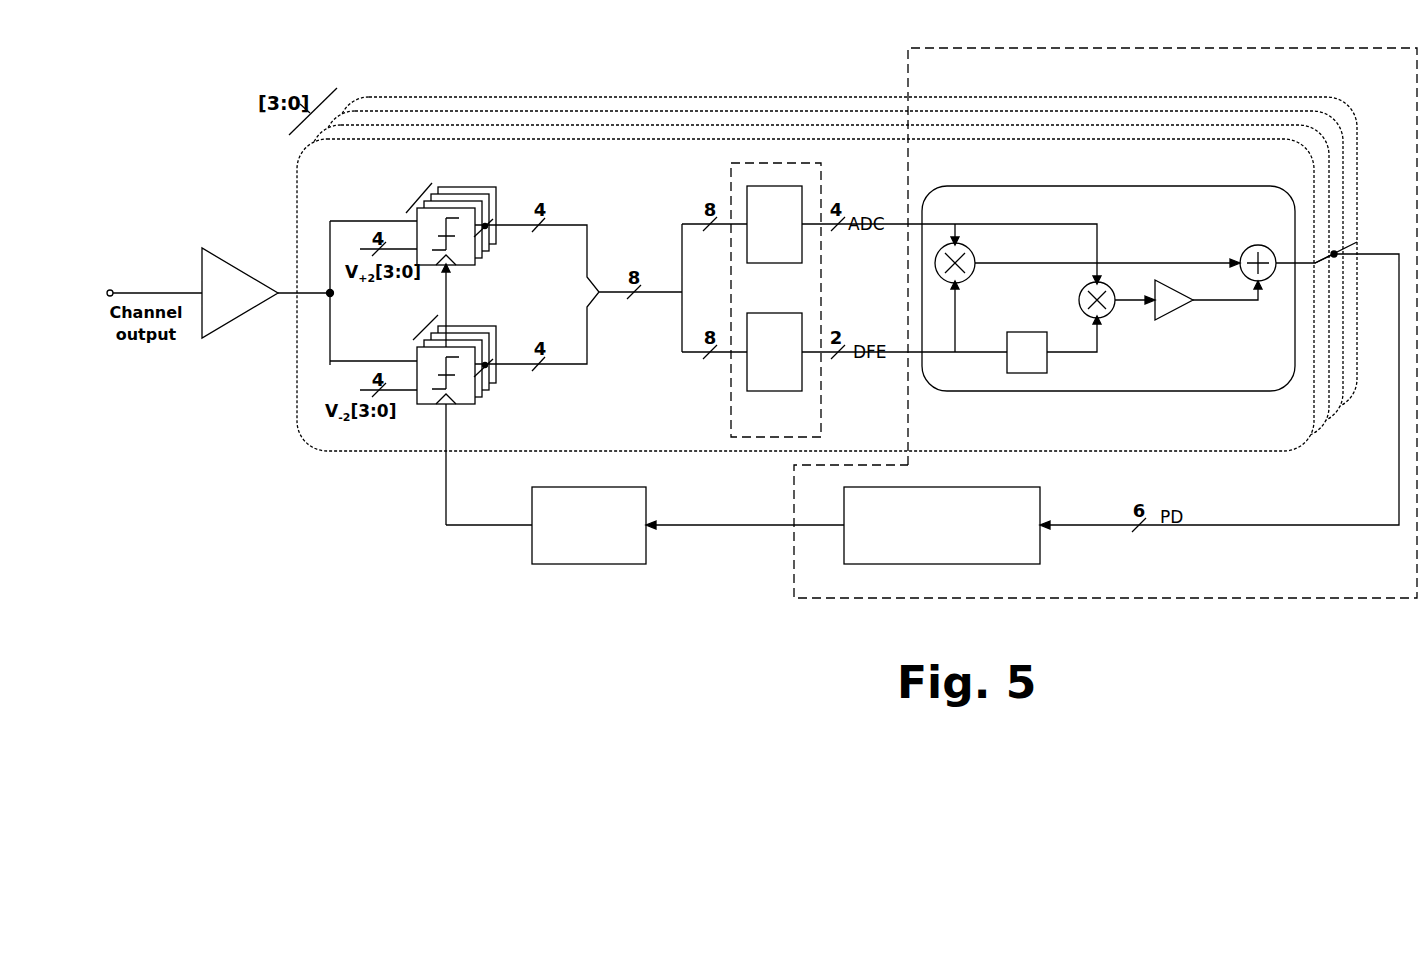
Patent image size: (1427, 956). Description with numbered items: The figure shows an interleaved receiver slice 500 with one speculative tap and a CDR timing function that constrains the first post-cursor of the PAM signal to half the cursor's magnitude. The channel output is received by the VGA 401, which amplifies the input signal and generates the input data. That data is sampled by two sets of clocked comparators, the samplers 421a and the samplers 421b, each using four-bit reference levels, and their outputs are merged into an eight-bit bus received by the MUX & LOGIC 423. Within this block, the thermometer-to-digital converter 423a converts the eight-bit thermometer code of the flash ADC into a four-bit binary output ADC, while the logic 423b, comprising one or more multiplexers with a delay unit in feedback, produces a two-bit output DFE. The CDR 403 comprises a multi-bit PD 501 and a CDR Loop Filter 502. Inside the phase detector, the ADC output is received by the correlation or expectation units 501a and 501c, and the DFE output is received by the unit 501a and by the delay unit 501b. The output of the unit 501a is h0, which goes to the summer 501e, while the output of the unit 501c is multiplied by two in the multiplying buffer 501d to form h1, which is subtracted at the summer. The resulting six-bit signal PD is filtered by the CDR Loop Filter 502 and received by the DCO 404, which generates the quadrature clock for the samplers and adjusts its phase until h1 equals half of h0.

The interleaved receiver slice 500 is at (817, 52).
The CDR 403 is at (1105, 323).
The VGA 401 is at (227, 257).
The set of samplers 421a is at (418, 193).
The set of samplers 421b is at (417, 348).
The MUX & LOGIC 423 is at (776, 300).
The thermometer-to-digital converter 423a is at (774, 224).
The logic 423b is at (774, 352).
The multi-bit PD 501 is at (1108, 288).
The correlation or expectation unit 501a is at (973, 249).
The delay unit 501b is at (1018, 332).
The correlation or expectation unit 501c is at (1079, 290).
The multiplying buffer 501d is at (1174, 311).
The summer 501e is at (1245, 247).
The CDR Loop Filter 502 is at (942, 525).
The DCO 404 is at (589, 525).